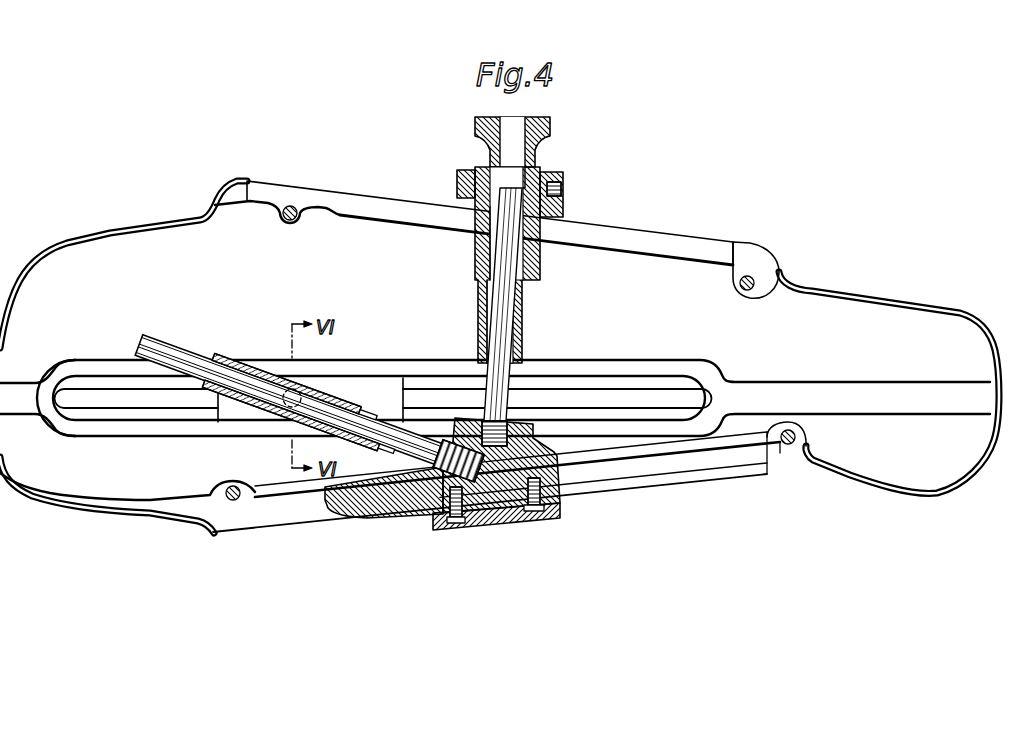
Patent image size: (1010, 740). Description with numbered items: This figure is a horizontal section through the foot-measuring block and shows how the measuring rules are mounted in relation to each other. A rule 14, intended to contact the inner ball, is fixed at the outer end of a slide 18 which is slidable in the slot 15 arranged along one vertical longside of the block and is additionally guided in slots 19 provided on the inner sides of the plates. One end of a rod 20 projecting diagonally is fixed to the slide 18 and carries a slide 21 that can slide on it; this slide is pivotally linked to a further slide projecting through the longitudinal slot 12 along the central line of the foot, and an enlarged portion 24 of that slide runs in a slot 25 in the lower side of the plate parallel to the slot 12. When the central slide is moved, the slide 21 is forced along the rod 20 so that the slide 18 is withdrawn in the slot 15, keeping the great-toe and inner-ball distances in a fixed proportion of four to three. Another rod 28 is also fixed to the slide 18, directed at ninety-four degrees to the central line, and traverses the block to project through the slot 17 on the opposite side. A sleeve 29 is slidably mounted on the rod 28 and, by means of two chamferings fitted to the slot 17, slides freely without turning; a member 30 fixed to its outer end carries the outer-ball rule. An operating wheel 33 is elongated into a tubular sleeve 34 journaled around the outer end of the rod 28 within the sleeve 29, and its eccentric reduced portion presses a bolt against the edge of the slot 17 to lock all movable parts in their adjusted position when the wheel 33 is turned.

The longitudinal slot 12 is at (578, 397).
The rule 14 is at (478, 522).
The slot 15 is at (652, 470).
The slot 17 is at (645, 240).
The slide 18 is at (391, 507).
The slots 19 is at (721, 460).
The rod 20 is at (162, 348).
The slide 21 is at (247, 360).
The enlarged portion 24 is at (378, 387).
The slot 25 is at (632, 380).
The rod 28 is at (492, 349).
The sleeve 29 is at (521, 302).
The member 30 is at (457, 178).
The operating wheel 33 is at (553, 134).
The tubular sleeve 34 is at (486, 255).